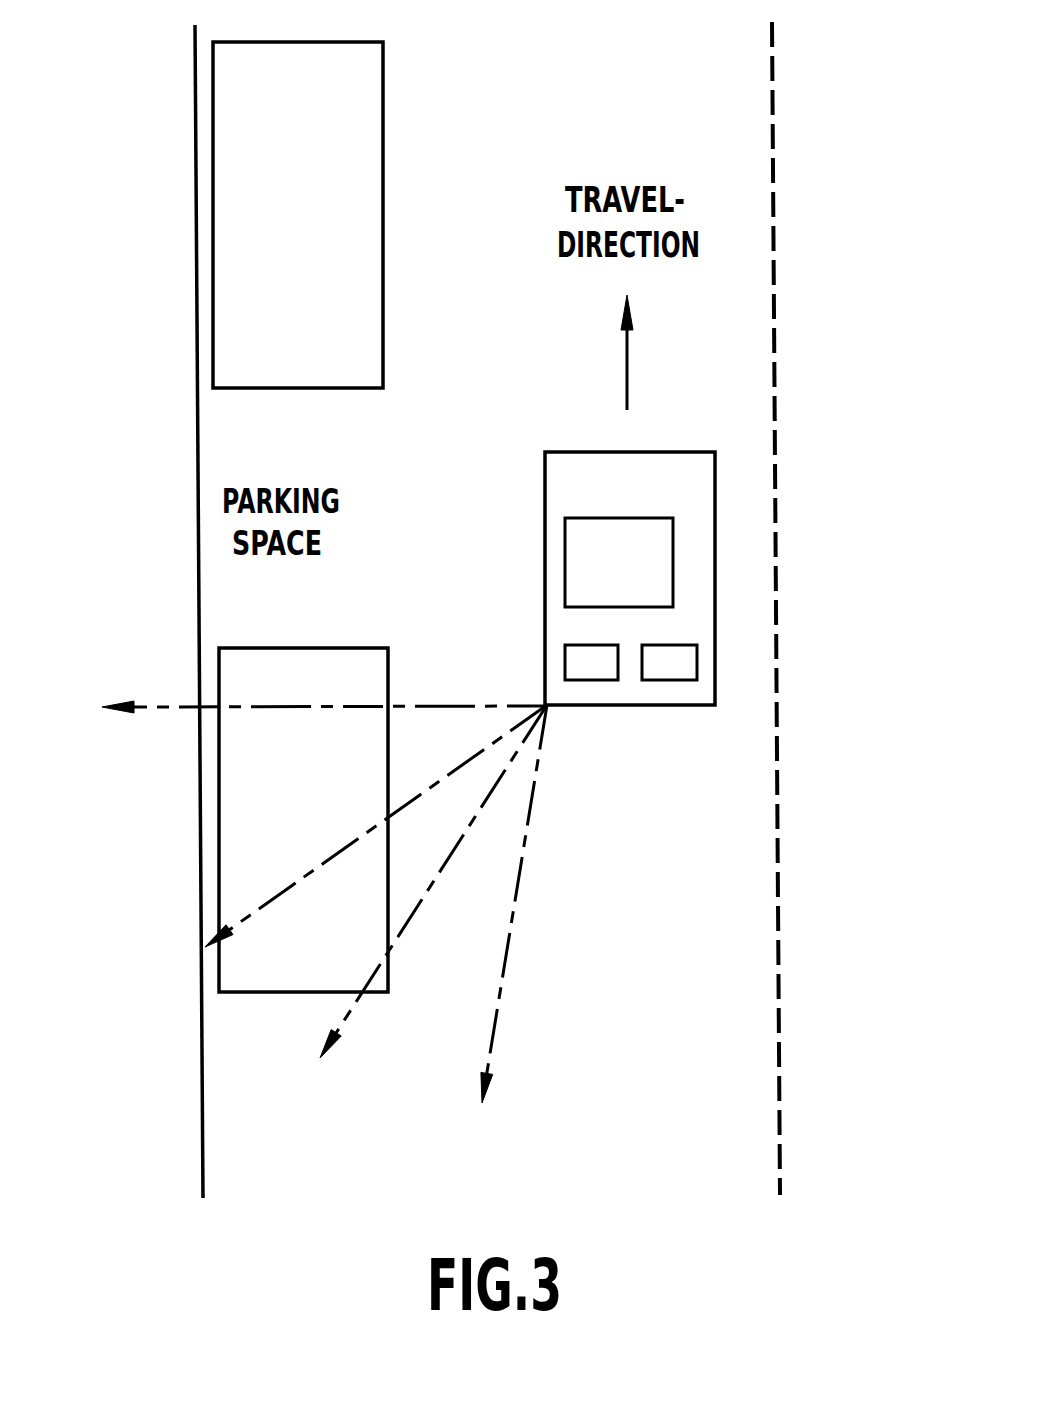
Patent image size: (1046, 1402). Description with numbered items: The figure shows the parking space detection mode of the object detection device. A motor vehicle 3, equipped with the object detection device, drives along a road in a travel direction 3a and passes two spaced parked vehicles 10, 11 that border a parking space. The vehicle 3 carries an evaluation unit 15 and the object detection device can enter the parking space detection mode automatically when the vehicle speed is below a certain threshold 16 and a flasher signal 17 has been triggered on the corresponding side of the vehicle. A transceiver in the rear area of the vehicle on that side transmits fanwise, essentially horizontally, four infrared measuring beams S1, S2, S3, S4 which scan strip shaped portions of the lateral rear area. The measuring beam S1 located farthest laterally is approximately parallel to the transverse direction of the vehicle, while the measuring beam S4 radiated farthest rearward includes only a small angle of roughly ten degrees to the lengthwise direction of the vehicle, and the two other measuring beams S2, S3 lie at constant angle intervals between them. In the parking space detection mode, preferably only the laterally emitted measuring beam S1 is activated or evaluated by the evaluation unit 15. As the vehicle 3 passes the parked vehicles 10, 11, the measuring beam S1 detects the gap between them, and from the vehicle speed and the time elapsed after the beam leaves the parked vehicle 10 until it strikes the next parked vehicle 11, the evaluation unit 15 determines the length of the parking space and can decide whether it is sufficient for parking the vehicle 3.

The motor vehicle 3 is at (715, 468).
The travel direction 3a is at (627, 378).
The parked vehicle 10 is at (352, 648).
The parked vehicle 11 is at (381, 265).
The evaluation unit 15 is at (673, 557).
The vehicle speed threshold 16 is at (598, 681).
The flasher signal 17 is at (672, 681).
The measuring beam S1 is at (447, 706).
The measuring beam S2 is at (433, 787).
The measuring beam S3 is at (430, 888).
The measuring beam S4 is at (525, 842).